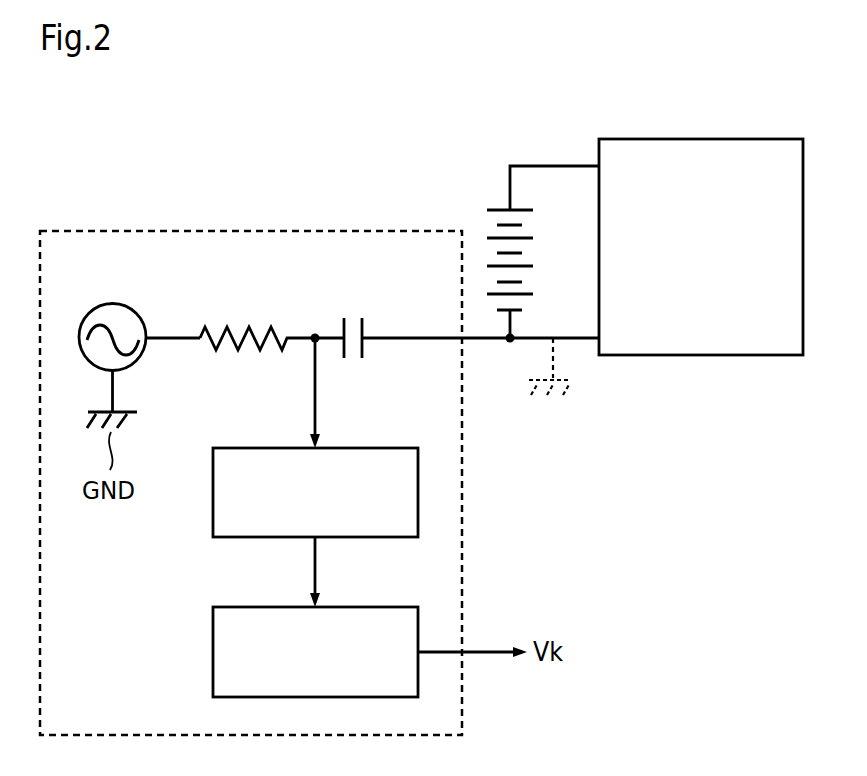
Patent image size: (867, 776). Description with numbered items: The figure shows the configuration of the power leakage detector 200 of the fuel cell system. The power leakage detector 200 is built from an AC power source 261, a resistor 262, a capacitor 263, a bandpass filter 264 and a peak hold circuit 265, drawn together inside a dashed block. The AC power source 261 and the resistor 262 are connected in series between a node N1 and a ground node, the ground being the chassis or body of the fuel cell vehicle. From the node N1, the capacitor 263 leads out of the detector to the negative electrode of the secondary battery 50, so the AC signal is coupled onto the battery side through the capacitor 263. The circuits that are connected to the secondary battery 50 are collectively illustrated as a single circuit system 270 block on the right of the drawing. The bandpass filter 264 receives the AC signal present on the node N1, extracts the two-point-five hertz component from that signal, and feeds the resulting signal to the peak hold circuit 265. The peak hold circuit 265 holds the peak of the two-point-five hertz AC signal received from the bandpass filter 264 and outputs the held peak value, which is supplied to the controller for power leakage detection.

The power leakage detector 200 is at (302, 231).
The AC power source 261 is at (128, 307).
The resistor 262 is at (226, 352).
The capacitor 263 is at (364, 325).
The bandpass filter 264 is at (368, 448).
The peak hold circuit 265 is at (368, 607).
The secondary battery 50 is at (493, 230).
The circuit system 270 is at (716, 139).
The node N1 is at (316, 333).